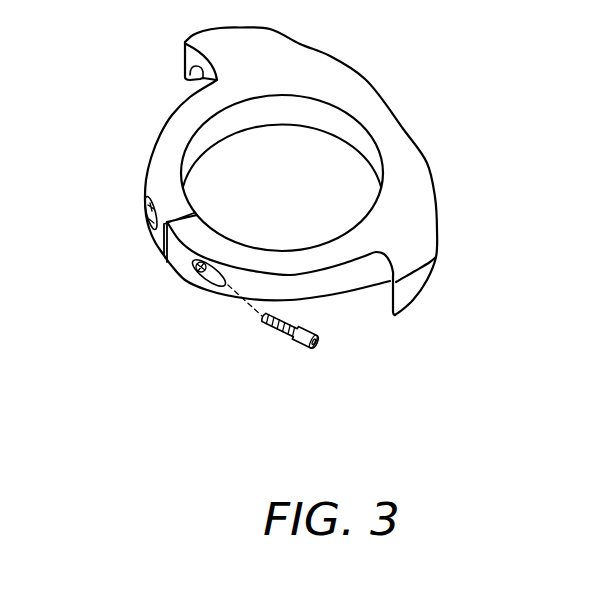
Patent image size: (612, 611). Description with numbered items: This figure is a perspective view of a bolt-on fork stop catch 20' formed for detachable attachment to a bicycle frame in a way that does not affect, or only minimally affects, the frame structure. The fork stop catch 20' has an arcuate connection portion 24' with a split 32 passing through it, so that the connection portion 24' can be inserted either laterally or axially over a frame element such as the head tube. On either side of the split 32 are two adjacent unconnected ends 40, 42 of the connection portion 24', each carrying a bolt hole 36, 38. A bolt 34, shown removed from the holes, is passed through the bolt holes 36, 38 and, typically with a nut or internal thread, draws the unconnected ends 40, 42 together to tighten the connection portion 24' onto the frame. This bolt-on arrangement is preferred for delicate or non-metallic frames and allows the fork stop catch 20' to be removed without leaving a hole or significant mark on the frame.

The fork stop catch 20' is at (250, 204).
The arcuate connection portion 24' is at (282, 177).
The split 32 is at (165, 256).
The bolt 34 is at (287, 342).
The bolt hole 36 is at (205, 283).
The bolt hole 38 is at (148, 223).
The unconnected end 40 is at (202, 237).
The unconnected end 42 is at (155, 160).